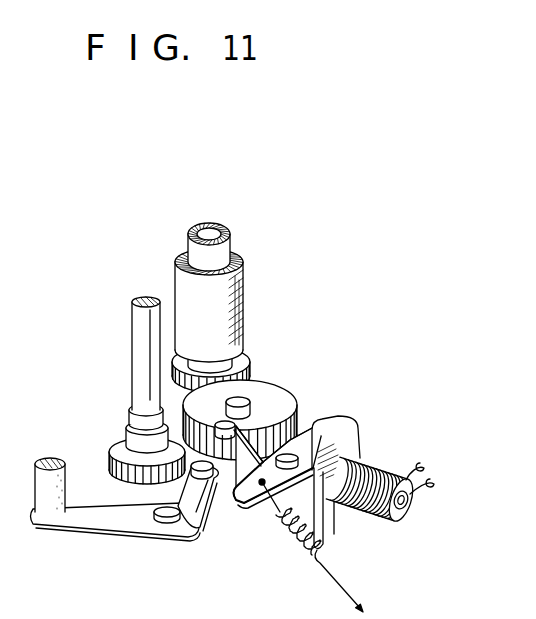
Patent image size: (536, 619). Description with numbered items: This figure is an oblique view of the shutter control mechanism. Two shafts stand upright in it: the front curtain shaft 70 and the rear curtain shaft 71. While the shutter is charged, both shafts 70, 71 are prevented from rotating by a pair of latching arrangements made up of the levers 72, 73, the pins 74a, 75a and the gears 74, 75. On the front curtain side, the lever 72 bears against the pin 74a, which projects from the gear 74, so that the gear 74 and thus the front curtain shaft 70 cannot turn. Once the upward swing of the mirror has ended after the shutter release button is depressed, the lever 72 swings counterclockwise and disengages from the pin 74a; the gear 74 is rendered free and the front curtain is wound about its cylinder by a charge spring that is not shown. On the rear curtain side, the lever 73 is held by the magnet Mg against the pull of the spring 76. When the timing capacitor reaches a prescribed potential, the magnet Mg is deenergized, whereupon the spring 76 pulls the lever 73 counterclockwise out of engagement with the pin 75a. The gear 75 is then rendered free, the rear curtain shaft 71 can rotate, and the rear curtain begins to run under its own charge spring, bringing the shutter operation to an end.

The front curtain shaft 70 is at (141, 316).
The rear curtain shaft 71 is at (202, 223).
The lever 72 is at (115, 517).
The lever 73 is at (322, 440).
The gear 74 is at (227, 498).
The pin 74a is at (208, 510).
The gear 75 is at (265, 392).
The pin 75a is at (250, 424).
The spring 76 is at (295, 550).
The magnet Mg is at (366, 520).